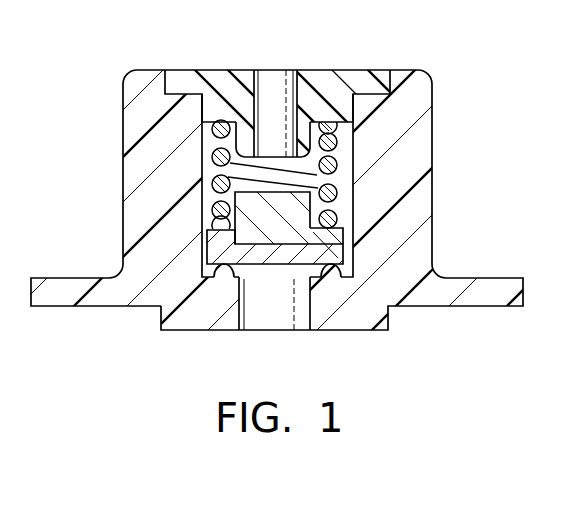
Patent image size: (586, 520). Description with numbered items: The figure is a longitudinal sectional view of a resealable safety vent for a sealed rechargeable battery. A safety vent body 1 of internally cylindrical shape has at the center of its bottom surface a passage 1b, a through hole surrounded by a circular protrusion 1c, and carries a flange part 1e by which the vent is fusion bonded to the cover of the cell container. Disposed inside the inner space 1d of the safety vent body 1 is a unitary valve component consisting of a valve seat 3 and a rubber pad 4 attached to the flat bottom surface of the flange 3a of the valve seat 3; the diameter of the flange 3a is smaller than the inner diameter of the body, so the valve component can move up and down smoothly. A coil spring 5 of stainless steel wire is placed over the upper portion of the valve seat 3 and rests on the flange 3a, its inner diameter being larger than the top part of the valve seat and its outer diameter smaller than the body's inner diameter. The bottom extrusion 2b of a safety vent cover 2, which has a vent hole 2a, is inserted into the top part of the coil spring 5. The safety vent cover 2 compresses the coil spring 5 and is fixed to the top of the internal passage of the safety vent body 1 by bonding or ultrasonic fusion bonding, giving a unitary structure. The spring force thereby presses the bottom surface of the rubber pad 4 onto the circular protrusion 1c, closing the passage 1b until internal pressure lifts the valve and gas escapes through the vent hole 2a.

The safety vent body 1 is at (412, 107).
The passage 1b is at (276, 310).
The circular protrusion 1c is at (332, 270).
The inner space 1d is at (210, 195).
The flange part 1e is at (65, 288).
The safety vent cover 2 is at (327, 83).
The vent hole 2a is at (277, 90).
The bottom extrusion 2b is at (248, 145).
The valve seat 3 is at (298, 207).
The flange 3a is at (340, 232).
The rubber pad 4 is at (212, 248).
The coil spring 5 is at (335, 150).